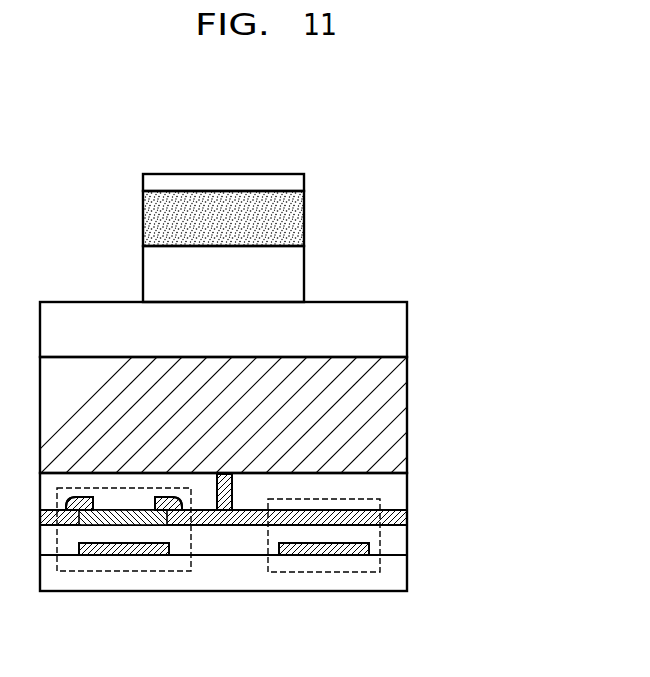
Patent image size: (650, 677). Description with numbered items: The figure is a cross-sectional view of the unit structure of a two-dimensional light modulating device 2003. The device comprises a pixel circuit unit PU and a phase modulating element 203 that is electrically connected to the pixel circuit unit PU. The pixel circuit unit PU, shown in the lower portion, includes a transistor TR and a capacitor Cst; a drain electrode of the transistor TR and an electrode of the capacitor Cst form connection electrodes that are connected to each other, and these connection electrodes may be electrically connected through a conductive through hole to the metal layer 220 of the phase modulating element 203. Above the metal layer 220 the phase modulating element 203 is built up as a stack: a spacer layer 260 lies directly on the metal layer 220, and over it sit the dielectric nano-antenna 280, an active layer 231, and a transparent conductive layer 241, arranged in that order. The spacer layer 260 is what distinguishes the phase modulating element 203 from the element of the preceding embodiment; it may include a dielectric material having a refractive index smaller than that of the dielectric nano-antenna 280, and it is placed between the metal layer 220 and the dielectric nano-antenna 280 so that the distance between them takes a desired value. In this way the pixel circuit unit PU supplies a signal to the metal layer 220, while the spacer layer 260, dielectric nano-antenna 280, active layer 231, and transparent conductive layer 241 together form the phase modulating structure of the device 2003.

The 2D light modulating device 2003 is at (518, 127).
The phase modulating element 203 is at (493, 470).
The transparent conductive layer 241 is at (300, 181).
The active layer 231 is at (300, 220).
The dielectric nano-antenna 280 is at (297, 275).
The spacer layer 260 is at (395, 327).
The metal layer 220 is at (392, 417).
The pixel circuit unit PU is at (493, 473).
The transistor TR is at (123, 571).
The capacitor Cst is at (322, 572).